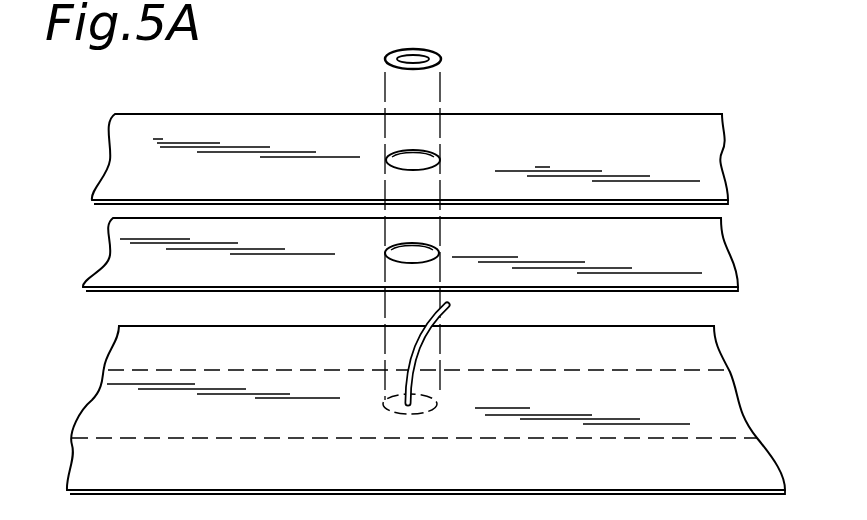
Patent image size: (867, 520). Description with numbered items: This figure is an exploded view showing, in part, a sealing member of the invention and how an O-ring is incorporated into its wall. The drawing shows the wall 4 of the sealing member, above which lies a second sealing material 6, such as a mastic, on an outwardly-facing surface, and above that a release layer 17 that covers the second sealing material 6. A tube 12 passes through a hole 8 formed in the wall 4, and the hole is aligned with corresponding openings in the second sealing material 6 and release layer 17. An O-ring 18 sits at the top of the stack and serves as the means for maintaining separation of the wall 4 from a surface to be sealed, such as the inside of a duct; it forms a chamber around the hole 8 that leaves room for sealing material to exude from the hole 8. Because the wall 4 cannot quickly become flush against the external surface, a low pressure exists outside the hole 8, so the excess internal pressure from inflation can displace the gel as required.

The wall 4 is at (110, 417).
The second sealing material 6 is at (117, 268).
The hole 8 is at (402, 410).
The tube 12 is at (449, 307).
The release layer 17 is at (117, 177).
The O-ring 18 is at (402, 48).